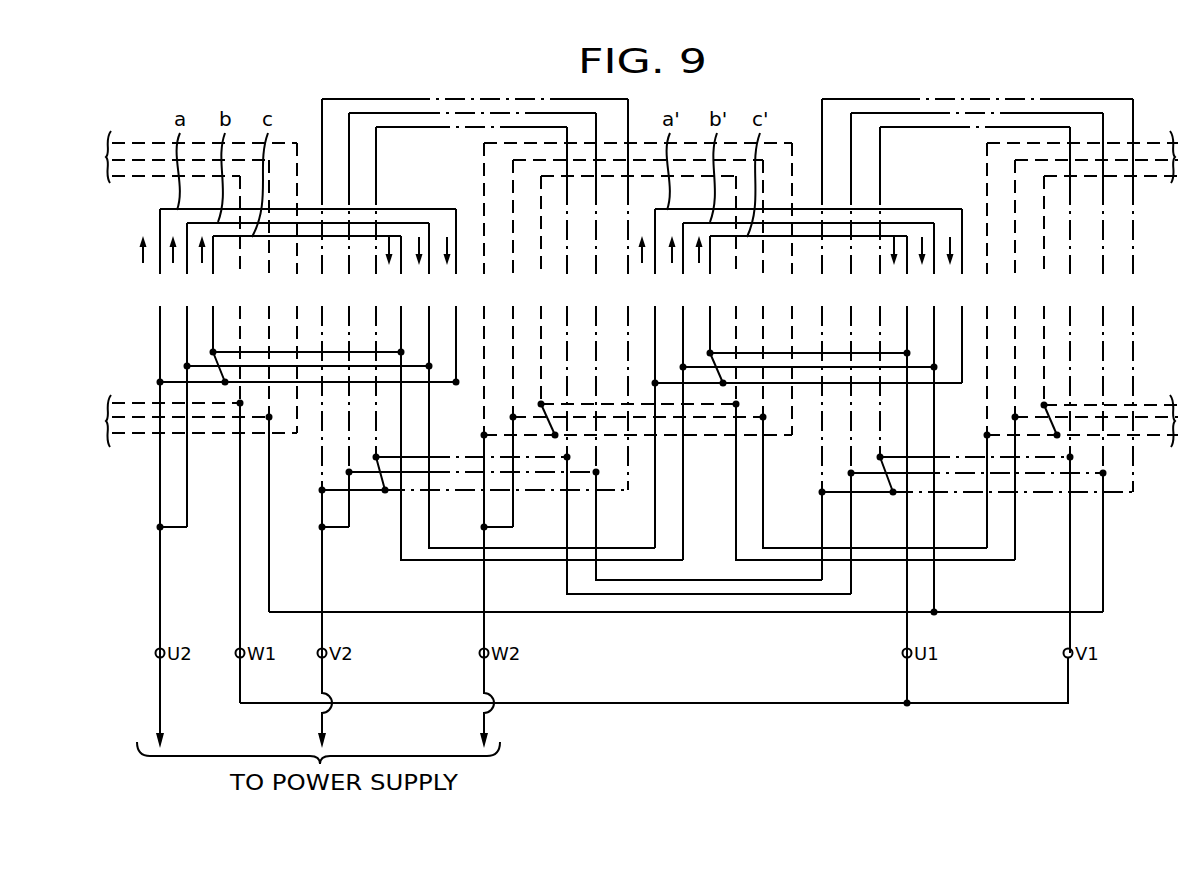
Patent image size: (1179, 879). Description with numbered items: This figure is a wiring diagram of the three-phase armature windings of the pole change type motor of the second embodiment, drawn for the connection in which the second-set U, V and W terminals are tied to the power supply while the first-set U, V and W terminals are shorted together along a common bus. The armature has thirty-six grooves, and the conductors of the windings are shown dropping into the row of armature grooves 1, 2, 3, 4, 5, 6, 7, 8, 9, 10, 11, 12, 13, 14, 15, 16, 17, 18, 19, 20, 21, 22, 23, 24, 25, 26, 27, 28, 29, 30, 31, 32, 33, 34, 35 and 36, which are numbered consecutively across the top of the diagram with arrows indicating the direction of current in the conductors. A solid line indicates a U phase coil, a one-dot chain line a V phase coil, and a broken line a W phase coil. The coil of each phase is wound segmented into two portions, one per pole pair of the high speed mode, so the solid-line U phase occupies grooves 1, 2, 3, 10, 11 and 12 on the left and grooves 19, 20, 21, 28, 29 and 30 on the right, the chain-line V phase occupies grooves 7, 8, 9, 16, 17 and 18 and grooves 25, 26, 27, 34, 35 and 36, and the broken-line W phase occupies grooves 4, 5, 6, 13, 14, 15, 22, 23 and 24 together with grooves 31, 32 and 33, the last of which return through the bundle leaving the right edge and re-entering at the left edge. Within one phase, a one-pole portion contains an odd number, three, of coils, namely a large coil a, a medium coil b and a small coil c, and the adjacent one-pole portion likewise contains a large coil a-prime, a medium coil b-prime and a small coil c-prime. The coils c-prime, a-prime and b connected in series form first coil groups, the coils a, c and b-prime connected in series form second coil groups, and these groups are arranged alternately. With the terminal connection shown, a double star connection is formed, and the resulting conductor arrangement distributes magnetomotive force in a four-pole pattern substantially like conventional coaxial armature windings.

The armature groove 1 is at (305, 472).
The armature groove 2 is at (305, 375).
The armature groove 3 is at (304, 311).
The armature groove 4 is at (240, 439).
The armature groove 5 is at (269, 386).
The armature groove 6 is at (297, 288).
The armature groove 7 is at (472, 417).
The armature groove 8 is at (470, 320).
The armature groove 9 is at (469, 308).
The armature groove 10 is at (536, 398).
The armature groove 11 is at (536, 385).
The armature groove 12 is at (456, 297).
The armature groove 13 is at (632, 439).
The armature groove 14 is at (632, 343).
The armature groove 15 is at (633, 307).
The armature groove 16 is at (703, 360).
The armature groove 17 is at (703, 346).
The armature groove 18 is at (628, 294).
The armature groove 19 is at (803, 378).
The armature groove 20 is at (803, 391).
The armature groove 21 is at (803, 311).
The armature groove 22 is at (870, 368).
The armature groove 23 is at (869, 354).
The armature groove 24 is at (792, 289).
The armature groove 25 is at (972, 339).
The armature groove 26 is at (971, 353).
The armature groove 27 is at (969, 309).
The armature groove 28 is at (907, 469).
The armature groove 29 is at (934, 417).
The armature groove 30 is at (962, 296).
The armature groove 31 is at (1077, 345).
The armature groove 32 is at (1091, 360).
The armature groove 33 is at (1105, 307).
The armature groove 34 is at (1073, 390).
The armature groove 35 is at (1103, 362).
The armature groove 36 is at (1133, 295).